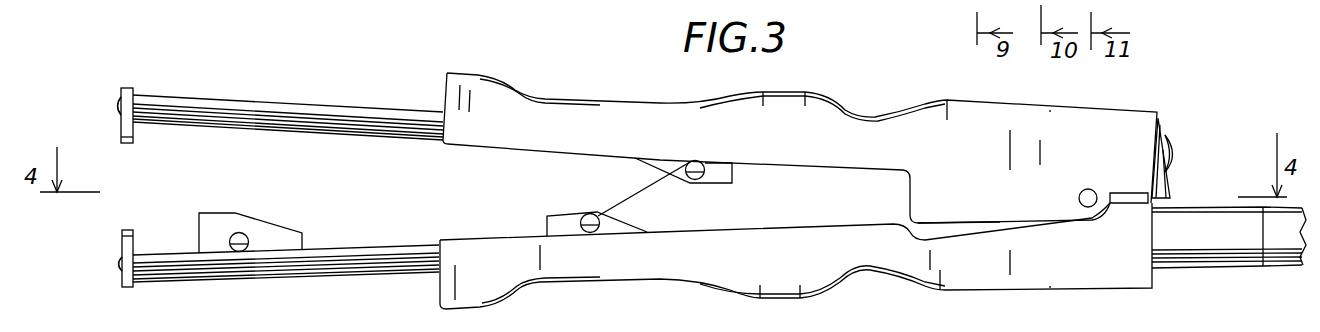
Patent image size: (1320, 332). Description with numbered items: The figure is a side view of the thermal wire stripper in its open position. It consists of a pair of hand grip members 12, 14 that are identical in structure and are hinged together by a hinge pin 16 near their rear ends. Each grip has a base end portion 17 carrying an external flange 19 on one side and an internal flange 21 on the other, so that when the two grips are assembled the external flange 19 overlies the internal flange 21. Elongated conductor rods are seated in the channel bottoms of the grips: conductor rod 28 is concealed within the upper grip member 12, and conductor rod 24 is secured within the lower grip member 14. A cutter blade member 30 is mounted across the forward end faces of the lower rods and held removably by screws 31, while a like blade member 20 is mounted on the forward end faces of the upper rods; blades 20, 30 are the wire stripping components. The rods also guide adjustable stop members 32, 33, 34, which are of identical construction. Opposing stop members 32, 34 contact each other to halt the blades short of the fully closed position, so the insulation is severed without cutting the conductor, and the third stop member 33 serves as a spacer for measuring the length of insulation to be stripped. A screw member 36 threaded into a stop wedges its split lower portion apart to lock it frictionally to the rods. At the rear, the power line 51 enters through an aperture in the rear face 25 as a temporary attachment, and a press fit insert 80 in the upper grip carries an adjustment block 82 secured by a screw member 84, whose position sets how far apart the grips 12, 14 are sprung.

The hand grip member 12 is at (603, 80).
The hand grip member 14 is at (577, 288).
The hinge pin 16 is at (1079, 197).
The base end portion 17 is at (1040, 94).
The external flange 19 is at (1037, 210).
The blade member 20 is at (120, 132).
The internal flange 21 is at (997, 223).
The conductor rod 24 is at (300, 268).
The rear face 25 is at (1160, 119).
The conductor rod 28 is at (342, 88).
The cutter blade member 30 is at (121, 240).
The screw 31 is at (120, 104).
The stop member 32 is at (548, 216).
The stop member 33 is at (302, 233).
The stop member 34 is at (707, 185).
The screw member 36 is at (277, 200).
The power line 51 is at (1232, 270).
The press fit insert 80 is at (1160, 135).
The adjustment block 82 is at (1170, 186).
The screw member 84 is at (1176, 153).